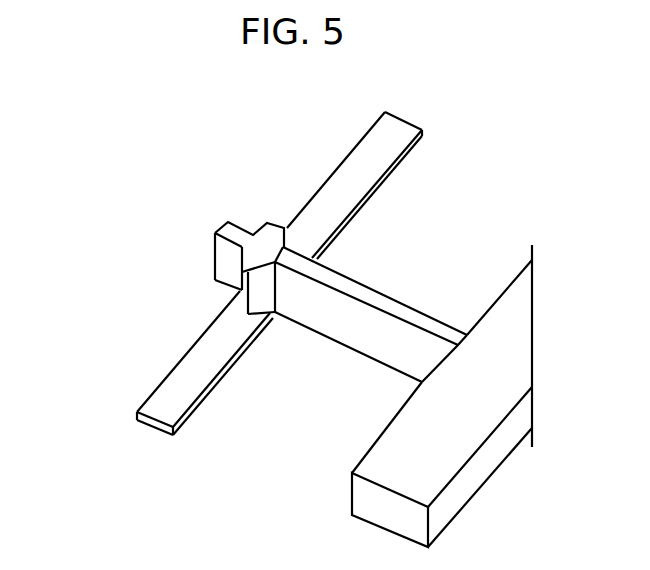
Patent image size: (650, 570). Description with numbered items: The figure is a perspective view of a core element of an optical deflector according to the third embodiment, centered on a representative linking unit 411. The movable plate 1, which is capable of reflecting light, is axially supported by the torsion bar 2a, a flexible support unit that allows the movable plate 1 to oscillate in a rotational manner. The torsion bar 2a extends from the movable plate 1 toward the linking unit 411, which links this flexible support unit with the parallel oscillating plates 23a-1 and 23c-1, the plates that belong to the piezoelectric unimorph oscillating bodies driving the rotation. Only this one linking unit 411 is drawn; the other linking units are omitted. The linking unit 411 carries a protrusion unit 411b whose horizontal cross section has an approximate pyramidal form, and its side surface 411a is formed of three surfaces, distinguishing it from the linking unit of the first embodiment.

The movable plate 1 is at (473, 488).
The torsion bar 2a is at (385, 305).
The oscillating plate 23c-1 is at (355, 160).
The oscillating plate 23a-1 is at (157, 396).
The linking unit 411 is at (218, 279).
The side surface 411a is at (260, 306).
The protrusion unit 411b is at (281, 227).